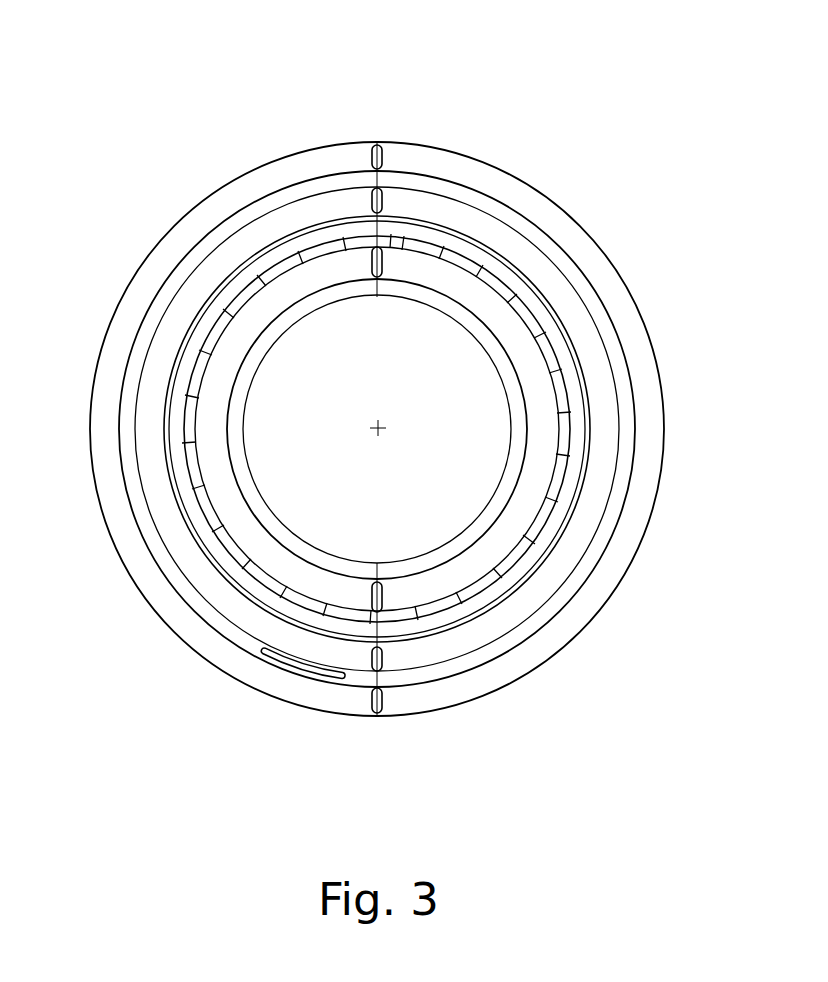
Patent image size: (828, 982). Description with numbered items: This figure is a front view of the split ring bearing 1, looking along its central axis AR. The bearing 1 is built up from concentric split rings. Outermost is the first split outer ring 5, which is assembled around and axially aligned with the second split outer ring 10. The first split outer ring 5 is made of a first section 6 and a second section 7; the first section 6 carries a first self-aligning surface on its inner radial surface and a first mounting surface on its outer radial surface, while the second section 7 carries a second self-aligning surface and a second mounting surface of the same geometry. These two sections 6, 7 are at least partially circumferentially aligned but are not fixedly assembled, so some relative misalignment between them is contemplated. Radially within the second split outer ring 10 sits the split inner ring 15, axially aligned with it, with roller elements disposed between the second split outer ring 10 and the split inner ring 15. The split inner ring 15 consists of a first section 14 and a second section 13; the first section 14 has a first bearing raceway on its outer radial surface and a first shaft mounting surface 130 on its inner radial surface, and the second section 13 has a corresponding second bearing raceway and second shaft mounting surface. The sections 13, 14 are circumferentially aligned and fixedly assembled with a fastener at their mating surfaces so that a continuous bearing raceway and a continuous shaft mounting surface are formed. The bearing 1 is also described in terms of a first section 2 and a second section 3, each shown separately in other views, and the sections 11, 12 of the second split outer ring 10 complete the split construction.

The split ring bearing 1 is at (580, 143).
The first section 2 is at (119, 292).
The second section 3 is at (634, 290).
The first split outer ring 5 is at (378, 50).
The first section 6 is at (351, 147).
The second section 7 is at (404, 147).
The second split outer ring 10 is at (418, 816).
The third pin 11 is at (357, 660).
The fourth pin 12 is at (397, 660).
The second section 13 is at (404, 588).
The first section 14 is at (351, 588).
The split inner ring 15 is at (387, 484).
The first shaft mounting surface 130 is at (466, 312).
The central axis AR is at (381, 426).